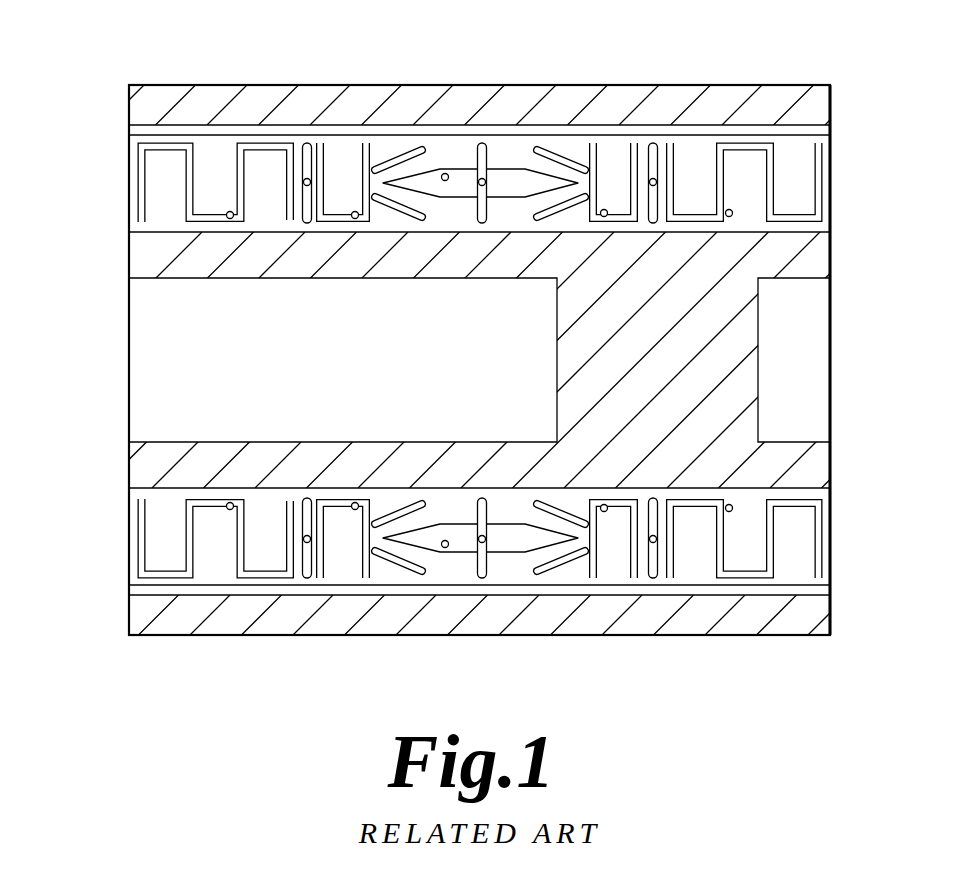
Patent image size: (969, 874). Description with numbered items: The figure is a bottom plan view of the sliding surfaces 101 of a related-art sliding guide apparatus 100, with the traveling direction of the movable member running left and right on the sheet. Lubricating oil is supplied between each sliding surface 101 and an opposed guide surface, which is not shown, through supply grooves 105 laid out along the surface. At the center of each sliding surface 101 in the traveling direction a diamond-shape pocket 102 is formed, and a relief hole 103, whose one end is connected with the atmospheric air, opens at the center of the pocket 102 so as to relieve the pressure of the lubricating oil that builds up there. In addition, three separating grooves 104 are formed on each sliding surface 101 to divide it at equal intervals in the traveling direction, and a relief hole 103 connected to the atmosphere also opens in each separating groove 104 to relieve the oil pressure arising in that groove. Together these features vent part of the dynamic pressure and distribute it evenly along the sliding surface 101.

The sliding guide apparatus 100 is at (100, 98).
The sliding surface 101 is at (160, 188).
The diamond-shape pocket 102 is at (443, 173).
The relief hole 103 is at (655, 179).
The separating groove 104 is at (303, 145).
The supply groove 105 is at (163, 147).